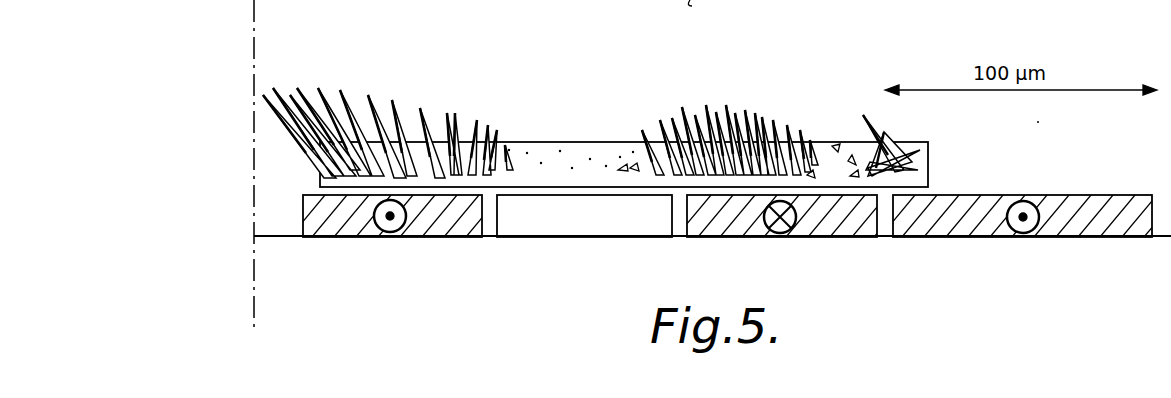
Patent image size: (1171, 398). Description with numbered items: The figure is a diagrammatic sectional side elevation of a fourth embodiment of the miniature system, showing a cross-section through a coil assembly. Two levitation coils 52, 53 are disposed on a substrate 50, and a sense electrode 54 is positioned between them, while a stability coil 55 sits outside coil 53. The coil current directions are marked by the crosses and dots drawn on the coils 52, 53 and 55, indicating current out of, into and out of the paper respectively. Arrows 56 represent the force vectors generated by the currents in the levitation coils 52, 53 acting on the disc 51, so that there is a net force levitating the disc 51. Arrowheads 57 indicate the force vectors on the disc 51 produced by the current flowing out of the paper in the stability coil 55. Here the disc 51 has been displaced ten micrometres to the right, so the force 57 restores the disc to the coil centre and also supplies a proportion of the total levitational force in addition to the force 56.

The substrate 50 is at (446, 297).
The disc 51 is at (570, 143).
The levitation coil 52 is at (360, 227).
The levitation coil 53 is at (740, 238).
The gap / substrate region 54 is at (563, 222).
The stability coil 55 is at (1097, 238).
The arrows 56 is at (396, 60).
The arrowheads 57 is at (855, 112).